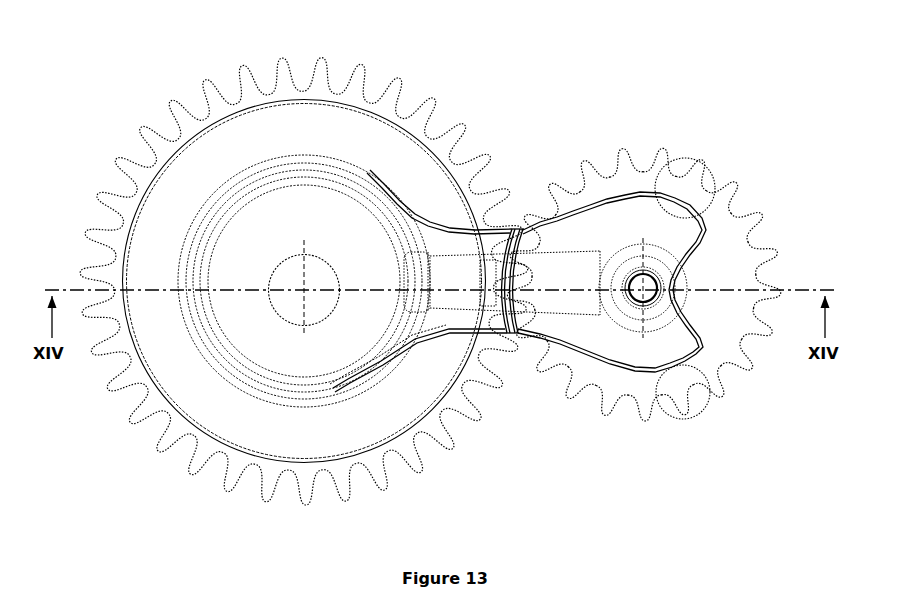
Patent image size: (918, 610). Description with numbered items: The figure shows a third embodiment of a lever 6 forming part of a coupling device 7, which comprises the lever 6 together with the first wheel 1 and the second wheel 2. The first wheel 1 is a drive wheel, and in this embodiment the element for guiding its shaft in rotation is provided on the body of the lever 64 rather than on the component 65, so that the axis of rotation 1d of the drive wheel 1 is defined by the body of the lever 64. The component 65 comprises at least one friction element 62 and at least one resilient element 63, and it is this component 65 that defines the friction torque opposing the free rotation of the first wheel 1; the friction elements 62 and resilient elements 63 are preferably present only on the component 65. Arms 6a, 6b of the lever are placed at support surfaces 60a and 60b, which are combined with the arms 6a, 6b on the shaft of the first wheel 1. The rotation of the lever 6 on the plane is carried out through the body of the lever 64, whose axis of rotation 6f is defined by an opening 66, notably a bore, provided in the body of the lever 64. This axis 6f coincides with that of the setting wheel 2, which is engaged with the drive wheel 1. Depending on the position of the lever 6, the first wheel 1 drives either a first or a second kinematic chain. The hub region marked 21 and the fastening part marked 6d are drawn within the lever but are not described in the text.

The first wheel 1 is at (773, 228).
The axis of rotation of the drive wheel 1d is at (645, 292).
The setting wheel 2 is at (188, 113).
The eccentric hub 21 is at (292, 257).
The lever 6 is at (422, 230).
The arm 6a is at (490, 248).
The arm 6b is at (507, 325).
The bolt 6d is at (462, 277).
The axis of rotation of the lever 6f is at (304, 290).
The coupling device 7 is at (557, 112).
The support surface 60a is at (647, 237).
The support surface 60b is at (647, 327).
The friction element 62 is at (641, 232).
The resilient element 63 is at (528, 245).
The body of the lever 64 is at (285, 347).
The component 65 is at (688, 172).
The opening 66 is at (294, 296).